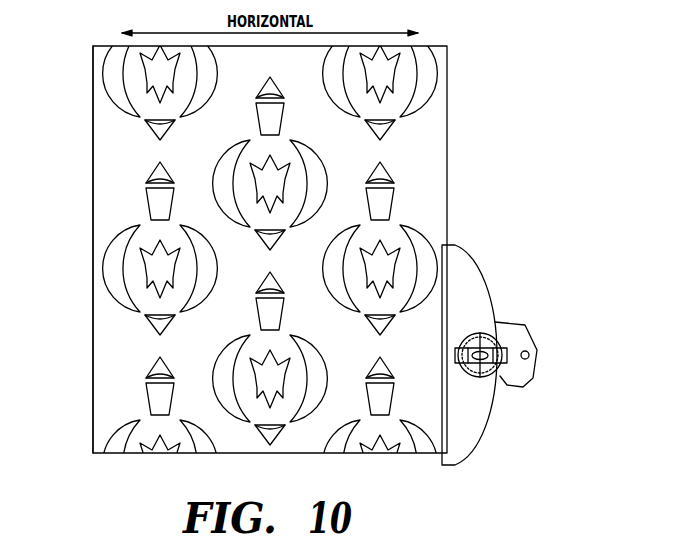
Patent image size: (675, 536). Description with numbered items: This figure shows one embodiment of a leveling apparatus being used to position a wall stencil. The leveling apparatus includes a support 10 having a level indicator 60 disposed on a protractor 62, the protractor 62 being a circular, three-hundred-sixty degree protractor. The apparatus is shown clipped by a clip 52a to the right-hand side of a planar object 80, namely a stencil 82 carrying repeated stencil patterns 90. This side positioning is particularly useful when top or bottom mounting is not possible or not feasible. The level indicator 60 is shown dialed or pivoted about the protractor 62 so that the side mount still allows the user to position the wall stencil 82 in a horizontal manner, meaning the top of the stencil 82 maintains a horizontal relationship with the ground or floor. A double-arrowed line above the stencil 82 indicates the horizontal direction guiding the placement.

The support 10 is at (513, 435).
The clip 52a is at (475, 283).
The level indicator 60 is at (507, 355).
The protractor 62 is at (495, 385).
The planar object 80 is at (105, 143).
The stencil 82 is at (339, 265).
The stencil patterns 90 is at (430, 73).